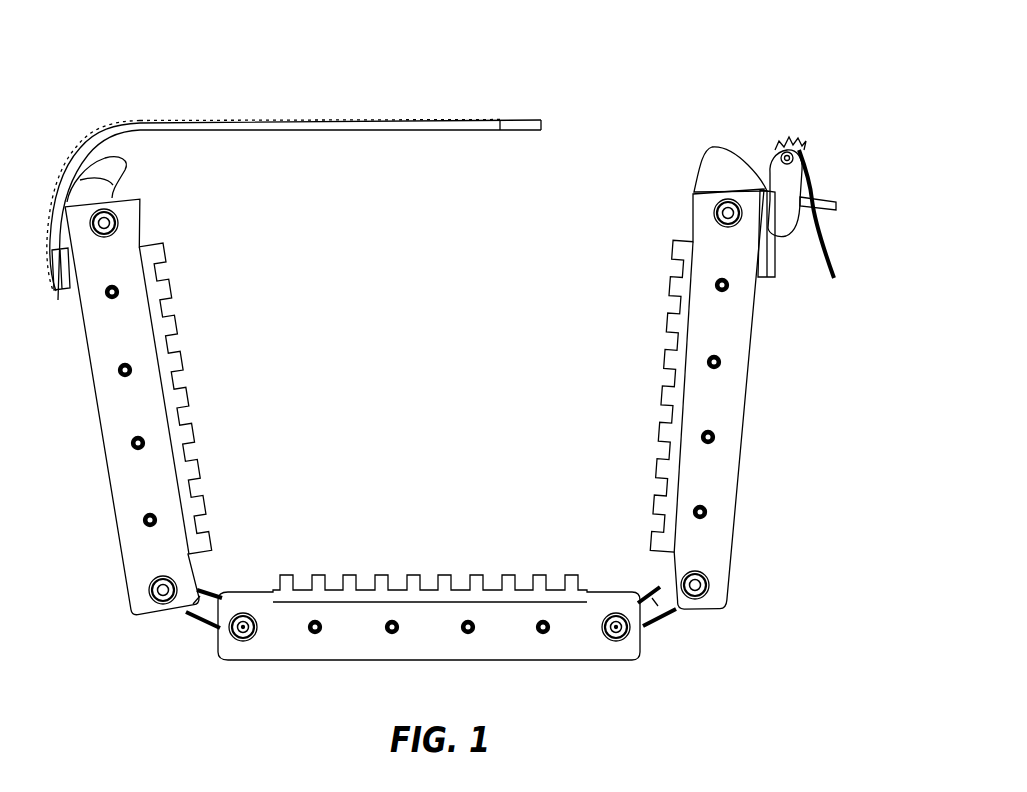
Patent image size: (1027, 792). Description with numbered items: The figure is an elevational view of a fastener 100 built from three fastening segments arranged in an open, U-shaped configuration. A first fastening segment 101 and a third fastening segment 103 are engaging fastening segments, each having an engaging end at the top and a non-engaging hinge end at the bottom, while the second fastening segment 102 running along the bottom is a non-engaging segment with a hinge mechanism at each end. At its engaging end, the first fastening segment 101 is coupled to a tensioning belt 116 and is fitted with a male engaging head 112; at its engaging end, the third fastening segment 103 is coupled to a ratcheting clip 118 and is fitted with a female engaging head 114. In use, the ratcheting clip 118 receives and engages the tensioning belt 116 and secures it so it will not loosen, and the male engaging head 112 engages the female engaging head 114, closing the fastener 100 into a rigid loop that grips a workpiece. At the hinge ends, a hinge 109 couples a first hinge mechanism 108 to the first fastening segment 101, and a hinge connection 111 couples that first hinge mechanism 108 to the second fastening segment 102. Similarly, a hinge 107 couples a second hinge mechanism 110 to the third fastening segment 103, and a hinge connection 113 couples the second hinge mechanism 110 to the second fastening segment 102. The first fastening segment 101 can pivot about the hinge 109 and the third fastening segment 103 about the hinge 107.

The fastener 100 is at (651, 100).
The first fastening segment 101 is at (125, 529).
The second fastening segment 102 is at (362, 642).
The third fastening segment 103 is at (735, 470).
The hinge 107 is at (706, 585).
The first hinge mechanism 108 is at (204, 614).
The hinge 109 is at (158, 590).
The second hinge mechanism 110 is at (652, 612).
The hinge connection 111 is at (243, 633).
The male engaging head 112 is at (133, 199).
The hinge connection 113 is at (617, 633).
The female engaging head 114 is at (737, 160).
The tensioning belt 116 is at (138, 121).
The ratcheting clip 118 is at (783, 180).